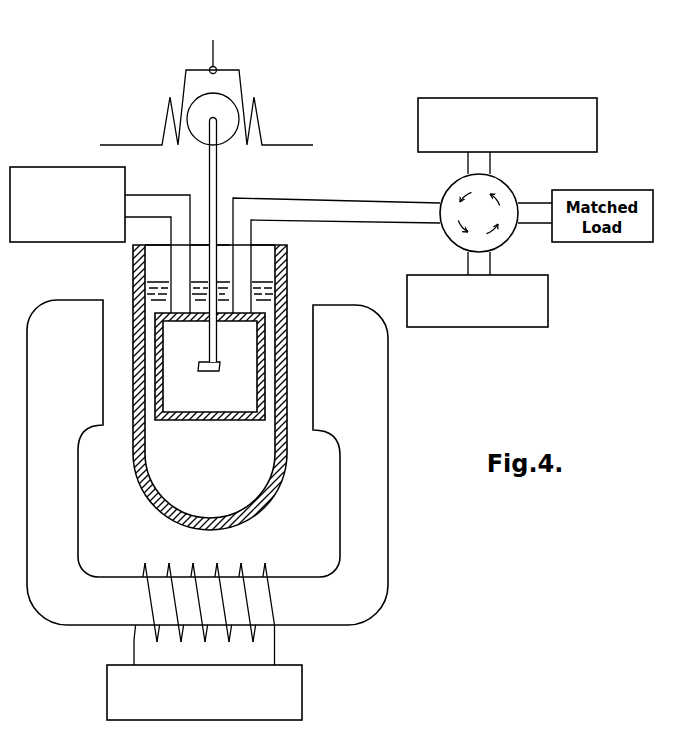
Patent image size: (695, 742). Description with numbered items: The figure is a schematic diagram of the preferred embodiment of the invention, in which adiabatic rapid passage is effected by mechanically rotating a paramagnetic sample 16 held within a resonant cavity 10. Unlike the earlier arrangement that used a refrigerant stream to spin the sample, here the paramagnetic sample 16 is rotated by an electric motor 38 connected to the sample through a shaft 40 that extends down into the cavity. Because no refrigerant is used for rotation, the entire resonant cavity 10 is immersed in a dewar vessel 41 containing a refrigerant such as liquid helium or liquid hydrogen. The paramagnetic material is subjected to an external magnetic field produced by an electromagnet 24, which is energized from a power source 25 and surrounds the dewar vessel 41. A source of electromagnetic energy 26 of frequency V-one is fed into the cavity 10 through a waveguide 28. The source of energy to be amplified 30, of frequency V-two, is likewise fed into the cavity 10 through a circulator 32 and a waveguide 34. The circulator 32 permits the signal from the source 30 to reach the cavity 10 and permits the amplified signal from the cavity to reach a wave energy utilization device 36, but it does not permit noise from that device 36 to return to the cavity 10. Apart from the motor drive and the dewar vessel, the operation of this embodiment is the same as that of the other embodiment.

The resonant cavity 10 is at (224, 420).
The paramagnetic sample 16 is at (218, 361).
The electromagnet 24 is at (388, 397).
The power source 25 is at (302, 686).
The source of electromagnetic energy 26 is at (95, 167).
The waveguide 28 is at (190, 195).
The source of energy to be amplified 30 is at (597, 124).
The circulator 32 is at (516, 195).
The waveguide 34 is at (360, 198).
The wave energy utilization device 36 is at (548, 293).
The electric motor 38 is at (222, 107).
The shaft 40 is at (216, 192).
The dewar vessel 41 is at (265, 500).